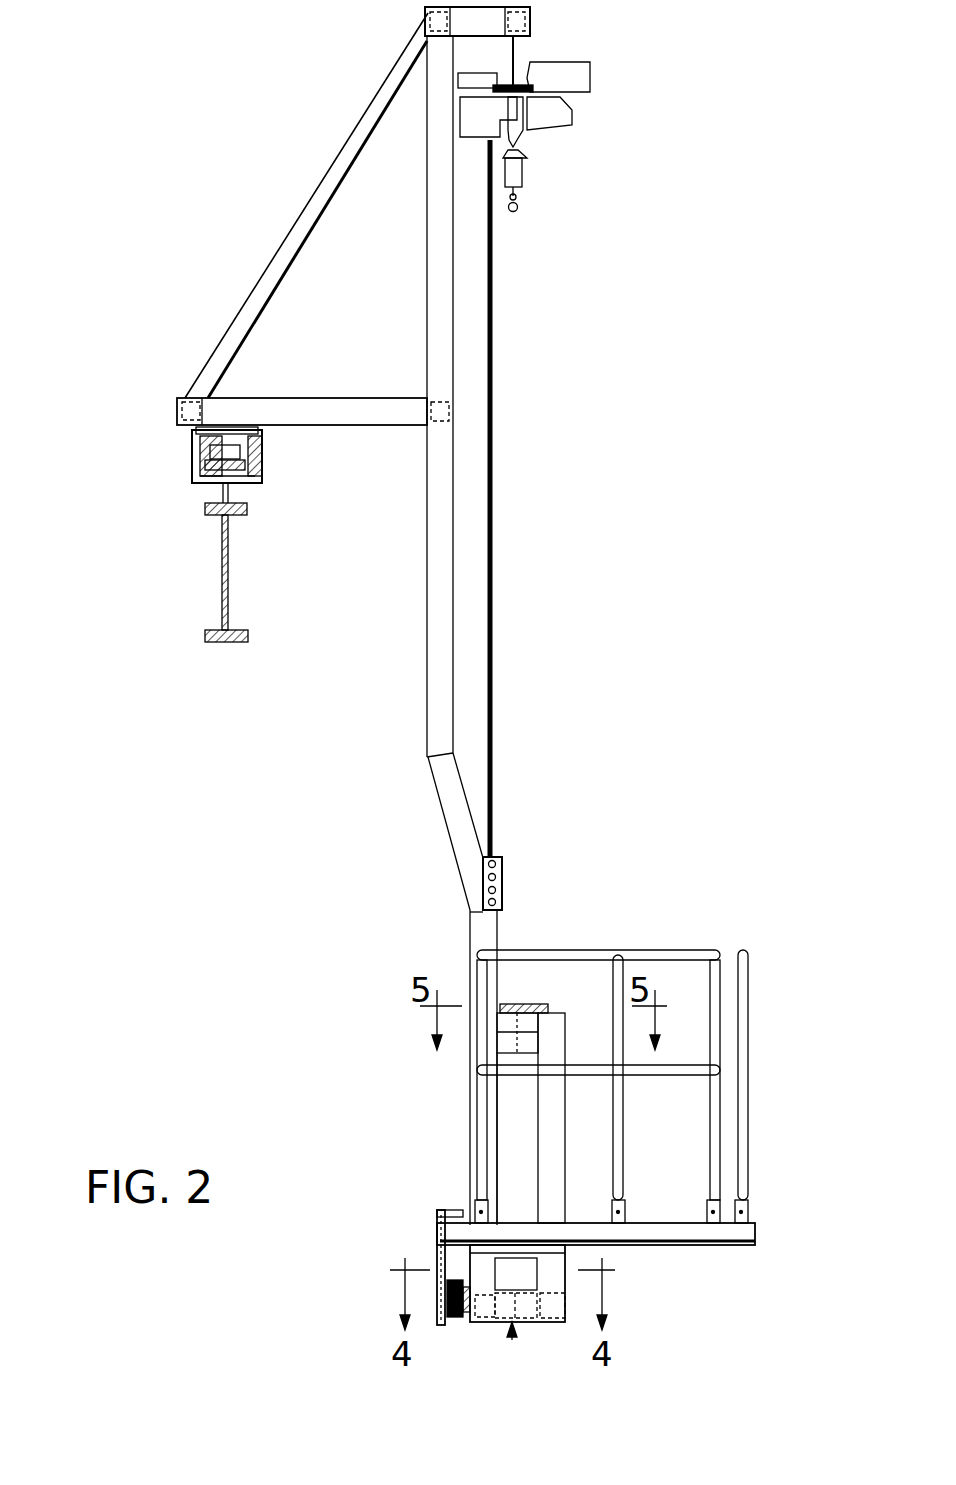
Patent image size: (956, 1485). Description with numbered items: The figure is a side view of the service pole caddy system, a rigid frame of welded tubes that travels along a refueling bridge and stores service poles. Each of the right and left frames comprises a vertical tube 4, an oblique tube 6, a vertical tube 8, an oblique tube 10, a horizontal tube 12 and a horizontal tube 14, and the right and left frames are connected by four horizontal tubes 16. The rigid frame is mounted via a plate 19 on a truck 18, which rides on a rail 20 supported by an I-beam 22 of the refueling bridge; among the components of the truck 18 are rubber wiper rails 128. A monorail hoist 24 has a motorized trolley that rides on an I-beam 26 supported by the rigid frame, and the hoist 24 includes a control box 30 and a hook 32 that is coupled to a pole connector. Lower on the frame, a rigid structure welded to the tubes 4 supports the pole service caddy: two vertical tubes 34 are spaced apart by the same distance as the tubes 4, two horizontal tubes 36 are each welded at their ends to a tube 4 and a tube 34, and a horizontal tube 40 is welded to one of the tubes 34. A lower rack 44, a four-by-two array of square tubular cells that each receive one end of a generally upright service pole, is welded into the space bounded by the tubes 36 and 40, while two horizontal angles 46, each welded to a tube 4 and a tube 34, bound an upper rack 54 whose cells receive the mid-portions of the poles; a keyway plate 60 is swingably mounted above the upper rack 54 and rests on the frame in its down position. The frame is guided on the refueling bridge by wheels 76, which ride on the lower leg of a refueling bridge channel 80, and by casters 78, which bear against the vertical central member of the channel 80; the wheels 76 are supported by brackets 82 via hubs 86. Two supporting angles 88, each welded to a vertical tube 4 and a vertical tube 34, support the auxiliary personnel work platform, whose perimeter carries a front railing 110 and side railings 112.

The vertical tube 4 is at (475, 935).
The oblique tube 6 is at (445, 786).
The vertical tube 8 is at (437, 637).
The oblique tube 10 is at (268, 283).
The horizontal tube 12 is at (348, 417).
The horizontal tube 14 is at (490, 37).
The horizontal tube 16 is at (530, 16).
The truck 18 is at (280, 485).
The plate 19 is at (195, 433).
The rail 20 is at (215, 499).
The I-beam 22 is at (222, 631).
The monorail hoist 24 is at (578, 120).
The I-beam 26 is at (518, 56).
The control box 30 is at (503, 866).
The hook 32 is at (522, 204).
The vertical tube 34 is at (532, 1056).
The horizontal tube 36 is at (532, 1322).
The horizontal tube 40 is at (565, 1297).
The lower rack 44 is at (512, 1340).
The horizontal angle 46 is at (500, 1022).
The upper rack 54 is at (548, 1027).
The keyway plate 60 is at (520, 1003).
The wheel 76 is at (443, 1275).
The caster 78 is at (440, 1211).
The refueling bridge channel 80 is at (437, 1283).
The bracket 82 is at (477, 1290).
The hub 86 is at (467, 1322).
The supporting angle 88 is at (600, 1246).
The front railing 110 is at (743, 1008).
The side railing 112 is at (668, 953).
The rubber wiper rail 128 is at (258, 482).